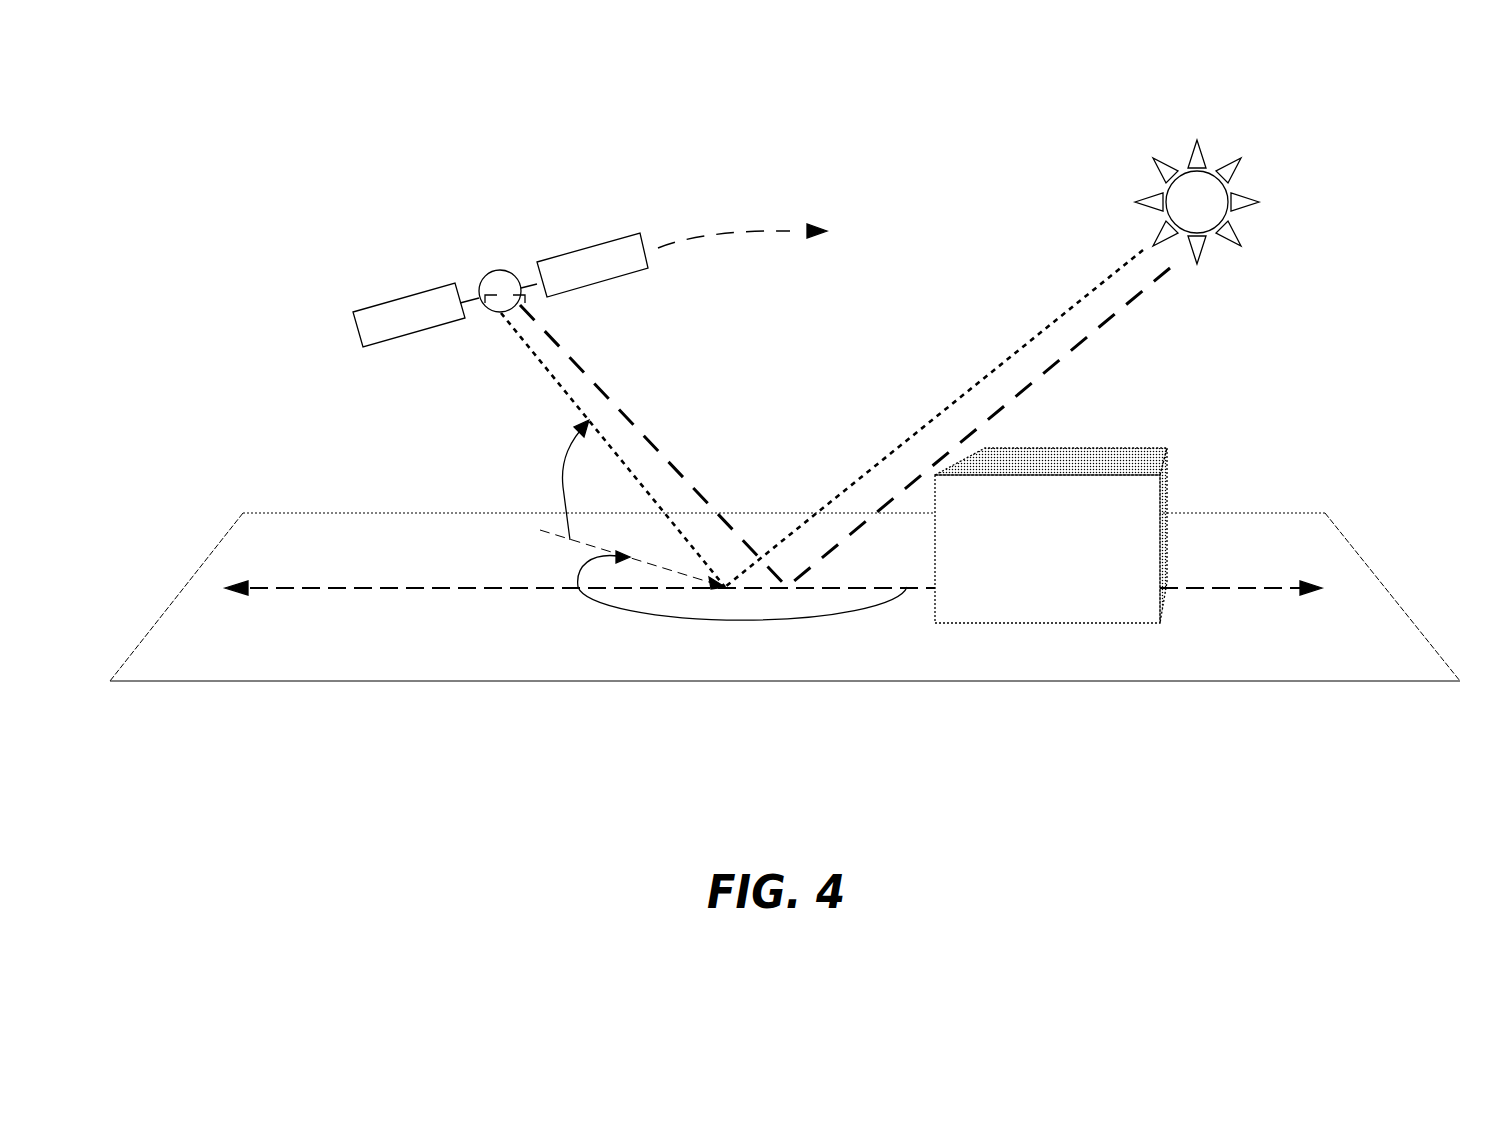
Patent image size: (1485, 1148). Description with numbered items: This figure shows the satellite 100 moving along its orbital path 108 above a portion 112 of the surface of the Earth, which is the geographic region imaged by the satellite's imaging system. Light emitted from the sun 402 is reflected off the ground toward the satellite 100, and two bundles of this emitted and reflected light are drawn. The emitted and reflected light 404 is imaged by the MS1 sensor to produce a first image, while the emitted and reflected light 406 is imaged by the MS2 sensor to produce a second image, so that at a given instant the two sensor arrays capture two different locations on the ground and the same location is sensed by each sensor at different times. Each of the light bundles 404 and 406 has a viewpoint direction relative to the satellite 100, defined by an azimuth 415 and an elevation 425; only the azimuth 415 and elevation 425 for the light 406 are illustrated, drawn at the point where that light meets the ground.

The satellite 100 is at (487, 268).
The orbital path 108 is at (737, 233).
The sun 402 is at (1212, 168).
The emitted and reflected light 404 is at (963, 437).
The emitted and reflected light 406 is at (903, 487).
The azimuth 415 is at (742, 622).
The elevation 425 is at (563, 487).
The portion of the surface of the Earth 112 is at (1382, 722).